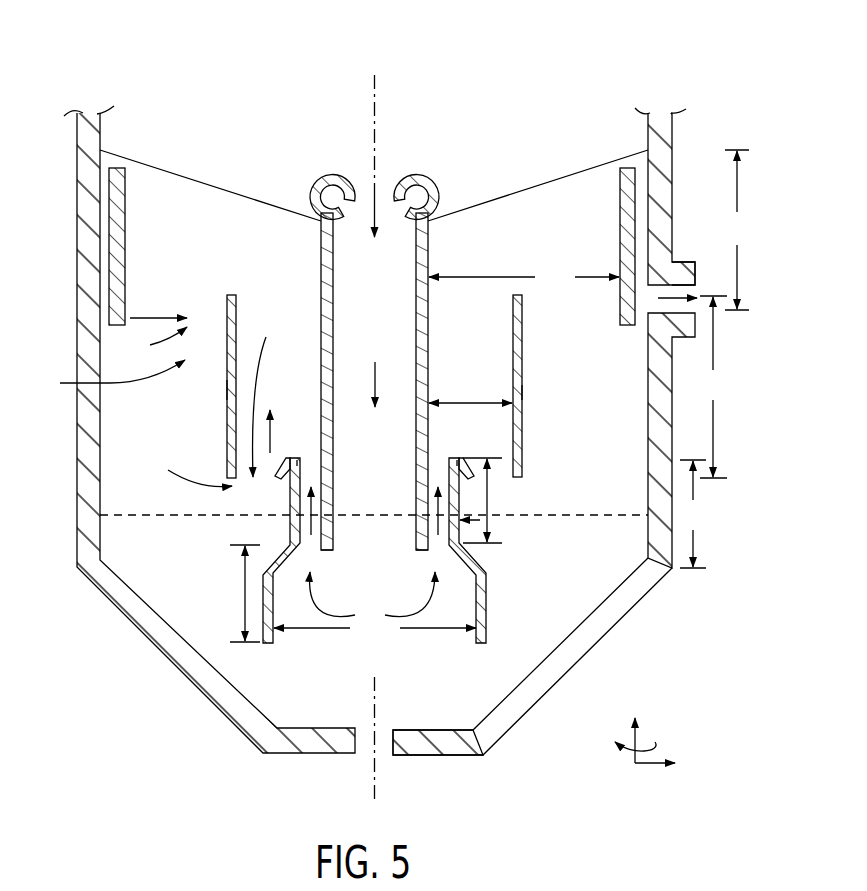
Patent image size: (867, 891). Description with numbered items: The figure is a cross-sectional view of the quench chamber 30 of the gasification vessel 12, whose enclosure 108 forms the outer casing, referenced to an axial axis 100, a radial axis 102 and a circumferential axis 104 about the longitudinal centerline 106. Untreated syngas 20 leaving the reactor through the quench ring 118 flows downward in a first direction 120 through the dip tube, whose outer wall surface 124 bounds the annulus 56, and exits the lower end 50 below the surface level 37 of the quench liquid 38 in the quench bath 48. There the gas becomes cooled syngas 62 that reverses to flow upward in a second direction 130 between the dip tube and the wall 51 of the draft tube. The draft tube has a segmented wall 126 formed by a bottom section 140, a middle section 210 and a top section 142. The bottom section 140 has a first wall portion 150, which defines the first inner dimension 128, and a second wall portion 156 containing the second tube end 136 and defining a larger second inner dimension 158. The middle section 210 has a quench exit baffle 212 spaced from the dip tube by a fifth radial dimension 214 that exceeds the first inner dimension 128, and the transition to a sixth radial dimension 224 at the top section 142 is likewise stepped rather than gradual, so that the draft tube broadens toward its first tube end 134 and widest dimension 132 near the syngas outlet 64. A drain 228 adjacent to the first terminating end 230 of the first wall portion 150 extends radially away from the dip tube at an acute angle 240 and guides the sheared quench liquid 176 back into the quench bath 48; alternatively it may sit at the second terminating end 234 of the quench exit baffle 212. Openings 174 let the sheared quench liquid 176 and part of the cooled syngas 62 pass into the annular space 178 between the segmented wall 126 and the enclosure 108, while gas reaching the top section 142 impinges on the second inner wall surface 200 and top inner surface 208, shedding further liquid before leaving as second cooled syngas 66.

The gasification vessel 12 is at (147, 55).
The untreated syngas 20 is at (375, 193).
The quench chamber 30 is at (52, 460).
The surface level 37 is at (600, 515).
The quench liquid 38 is at (440, 712).
The quench bath 48 is at (620, 663).
The lower end 50 is at (334, 553).
The wall 51 is at (226, 386).
The annulus 56 is at (543, 250).
The cooled syngas 62 is at (358, 616).
The syngas outlet 64 is at (683, 262).
The second cooled syngas 66 is at (675, 285).
The axial axis 100 is at (640, 722).
The radial axis 102 is at (660, 766).
The circumferential axis 104 is at (627, 748).
The longitudinal centerline 106 is at (378, 112).
The enclosure 108 is at (77, 262).
The quench ring 118 is at (420, 178).
The first direction 120 is at (375, 368).
The outer wall surface 124 is at (430, 248).
The segmented wall 126 is at (104, 376).
The first inner dimension 128 is at (427, 522).
The second direction 130 is at (270, 453).
The widest dimension 132 is at (142, 318).
The first tube end 134 is at (523, 338).
The second tube end 136 is at (273, 645).
The bottom section 140 is at (693, 514).
The top section 142 is at (737, 230).
The first wall portion 150 is at (488, 500).
The second wall portion 156 is at (243, 590).
The second inner dimension 158 is at (375, 628).
The plurality of openings 174 is at (172, 407).
The sheared quench liquid 176 is at (265, 394).
The annular space 178 is at (108, 507).
The second inner wall surface 200 is at (126, 222).
The top inner surface 208 is at (548, 183).
The middle section 210 is at (713, 387).
The quench exit baffle 212 is at (523, 390).
The fifth radial dimension 214 is at (472, 403).
The sixth radial dimension 224 is at (524, 277).
The drain 228 is at (455, 474).
The first terminating end 230 is at (297, 464).
The second terminating end 234 is at (229, 294).
The acute angle 240 is at (284, 489).